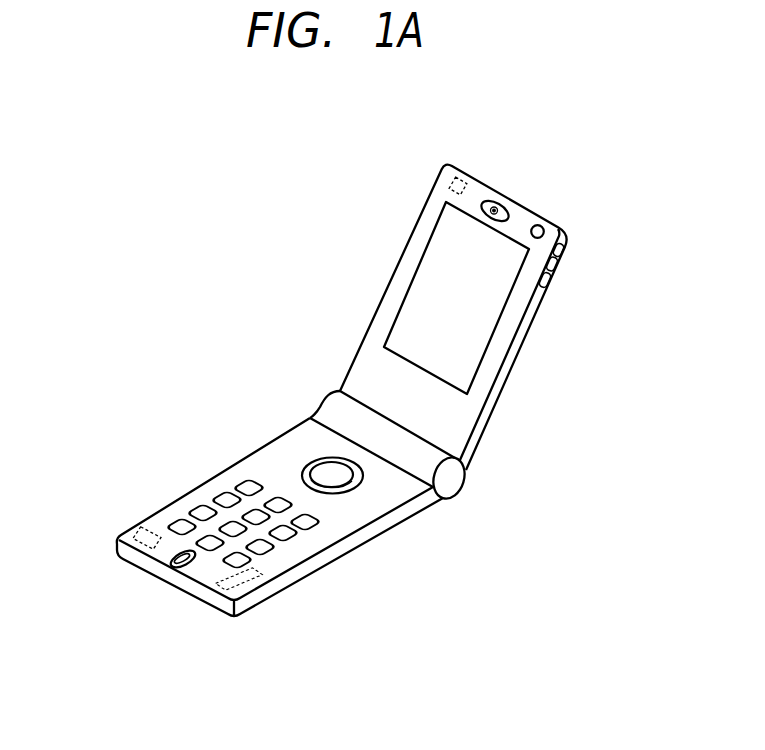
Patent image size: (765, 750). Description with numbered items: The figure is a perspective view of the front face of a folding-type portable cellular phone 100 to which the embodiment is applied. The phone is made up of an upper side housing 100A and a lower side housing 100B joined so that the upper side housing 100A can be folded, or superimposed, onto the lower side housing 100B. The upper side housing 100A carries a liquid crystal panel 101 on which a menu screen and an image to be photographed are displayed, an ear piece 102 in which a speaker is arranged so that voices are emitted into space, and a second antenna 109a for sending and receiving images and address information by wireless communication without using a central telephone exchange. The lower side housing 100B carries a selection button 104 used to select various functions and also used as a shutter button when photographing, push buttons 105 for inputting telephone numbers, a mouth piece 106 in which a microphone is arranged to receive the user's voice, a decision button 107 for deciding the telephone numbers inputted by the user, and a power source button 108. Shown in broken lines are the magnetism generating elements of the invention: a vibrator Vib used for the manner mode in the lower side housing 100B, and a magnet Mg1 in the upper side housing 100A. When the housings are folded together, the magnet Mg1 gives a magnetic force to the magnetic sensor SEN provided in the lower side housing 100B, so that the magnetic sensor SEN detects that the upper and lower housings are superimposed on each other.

The portable cellular phone 100 is at (262, 178).
The upper side housing 100A is at (527, 351).
The lower side housing 100B is at (307, 577).
The liquid crystal panel 101 is at (420, 283).
The ear piece 102 is at (488, 205).
The selection button 104 is at (335, 474).
The push buttons 105 is at (269, 475).
The mouth piece 106 is at (172, 560).
The decision button 107 is at (210, 547).
The power source button 108 is at (262, 556).
The second antenna 109a is at (572, 240).
The magnet Mg1 is at (447, 158).
The magnetic sensor SEN is at (137, 527).
The vibrator Vib is at (234, 600).